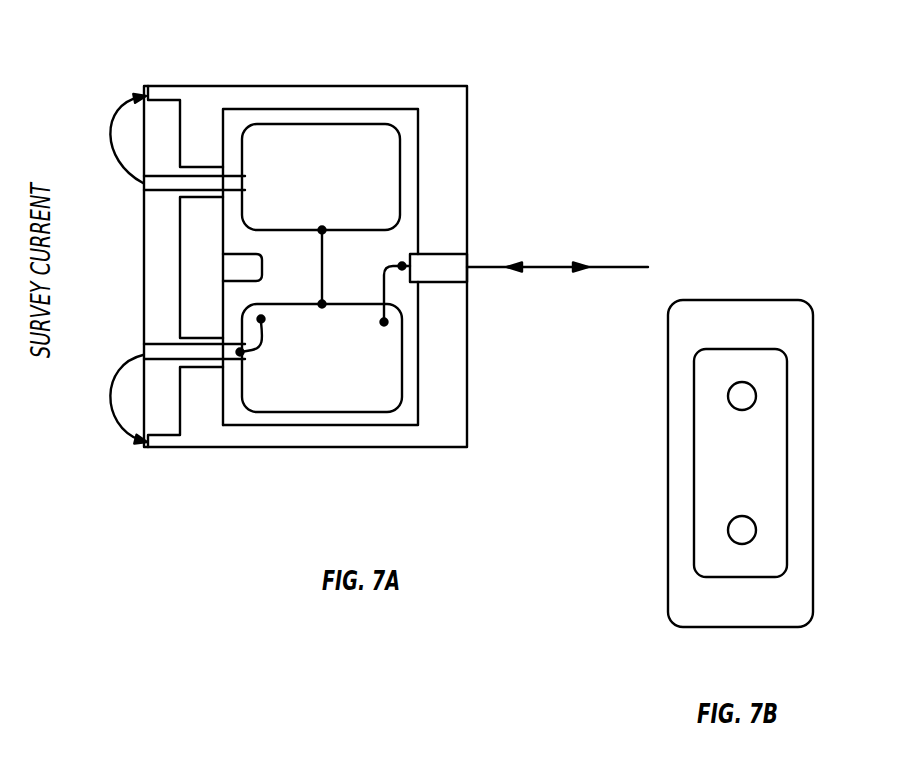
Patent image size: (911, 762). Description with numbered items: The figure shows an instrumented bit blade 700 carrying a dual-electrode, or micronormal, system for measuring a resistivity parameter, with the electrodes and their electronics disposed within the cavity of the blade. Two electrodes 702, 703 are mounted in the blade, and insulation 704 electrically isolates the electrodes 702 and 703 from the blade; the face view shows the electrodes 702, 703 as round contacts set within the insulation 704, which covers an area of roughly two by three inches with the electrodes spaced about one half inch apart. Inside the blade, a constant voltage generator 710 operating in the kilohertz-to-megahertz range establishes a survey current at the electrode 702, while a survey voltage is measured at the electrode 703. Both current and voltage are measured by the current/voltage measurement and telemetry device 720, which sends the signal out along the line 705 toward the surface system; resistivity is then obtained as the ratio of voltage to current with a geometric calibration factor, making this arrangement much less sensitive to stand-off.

In FIG. 7A, the downhole survey tool 700 is at (168, 86).
In FIG. 7A, the electrode 702 is at (143, 183).
In FIG. 7B, the electrode 702 is at (727, 396).
In FIG. 7B, the electrode 703 is at (727, 530).
In FIG. 7A, the insulation 704 is at (167, 437).
In FIG. 7B, the insulation 704 is at (783, 300).
In FIG. 7A, the line 705 is at (627, 267).
In FIG. 7A, the constant voltage generator 710 is at (378, 122).
In FIG. 7A, the current/voltage measurement and telemetry device 720 is at (375, 413).